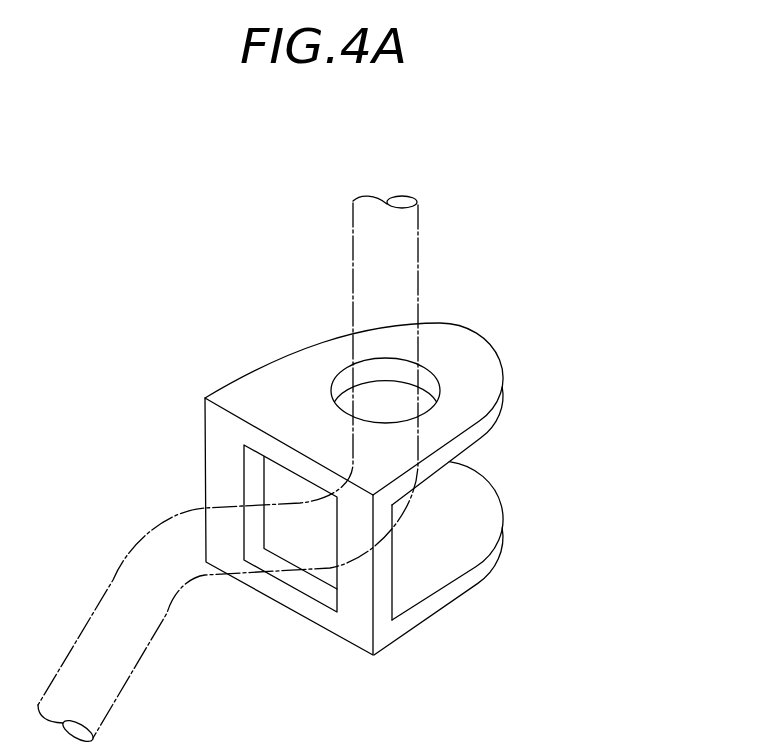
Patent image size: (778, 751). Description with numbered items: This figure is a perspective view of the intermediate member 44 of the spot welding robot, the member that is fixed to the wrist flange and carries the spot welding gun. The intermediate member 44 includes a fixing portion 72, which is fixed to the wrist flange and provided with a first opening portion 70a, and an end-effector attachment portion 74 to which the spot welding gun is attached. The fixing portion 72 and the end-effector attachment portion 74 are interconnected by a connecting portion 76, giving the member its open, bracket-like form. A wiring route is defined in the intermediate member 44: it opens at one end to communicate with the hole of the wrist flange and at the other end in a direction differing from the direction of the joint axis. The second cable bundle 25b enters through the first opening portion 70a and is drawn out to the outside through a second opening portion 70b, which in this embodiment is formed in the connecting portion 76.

The intermediate member 44 is at (174, 332).
The second cable bundle 25b is at (407, 240).
The first opening portion 70a is at (423, 382).
The second opening portion 70b is at (323, 592).
The fixing portion 72 is at (406, 406).
The end-effector attachment portion 74 is at (488, 505).
The connecting portion 76 is at (358, 588).